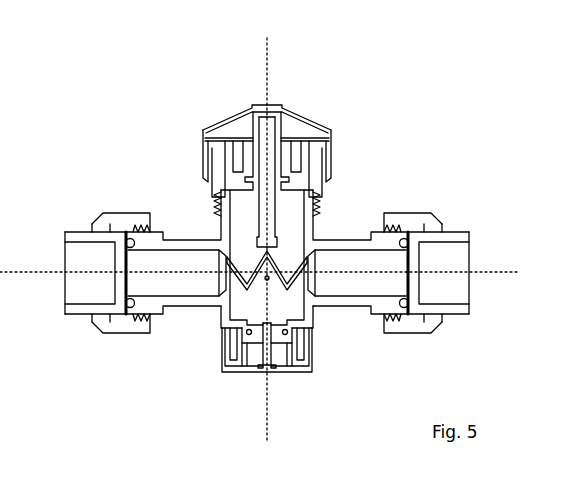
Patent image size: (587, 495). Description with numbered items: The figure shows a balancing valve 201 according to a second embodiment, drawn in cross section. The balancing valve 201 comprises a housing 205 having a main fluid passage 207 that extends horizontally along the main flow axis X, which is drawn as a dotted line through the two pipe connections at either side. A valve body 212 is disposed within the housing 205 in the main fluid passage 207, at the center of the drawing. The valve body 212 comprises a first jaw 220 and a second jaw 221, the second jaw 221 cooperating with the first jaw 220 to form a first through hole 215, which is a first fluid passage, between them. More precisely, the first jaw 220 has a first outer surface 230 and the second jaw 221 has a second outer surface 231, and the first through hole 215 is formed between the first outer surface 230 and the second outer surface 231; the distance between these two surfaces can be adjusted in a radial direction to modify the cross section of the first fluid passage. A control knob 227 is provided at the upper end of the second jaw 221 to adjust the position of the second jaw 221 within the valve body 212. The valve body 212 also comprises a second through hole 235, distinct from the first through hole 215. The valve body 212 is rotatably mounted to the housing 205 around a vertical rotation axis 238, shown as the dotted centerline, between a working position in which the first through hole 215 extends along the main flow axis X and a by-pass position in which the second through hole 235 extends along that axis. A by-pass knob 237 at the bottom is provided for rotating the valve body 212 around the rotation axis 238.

The balancing valve 201 is at (96, 88).
The housing 205 is at (233, 252).
The main fluid passage 207 is at (378, 263).
The valve body 212 is at (279, 248).
The first through hole 215 is at (223, 262).
The first jaw 220 is at (295, 307).
The second jaw 221 is at (293, 237).
The control knob 227 is at (318, 132).
The first outer surface 230 is at (230, 287).
The second outer surface 231 is at (228, 256).
The second through hole 235 is at (266, 280).
The by-pass knob 237 is at (305, 367).
The rotation axis 238 is at (268, 60).